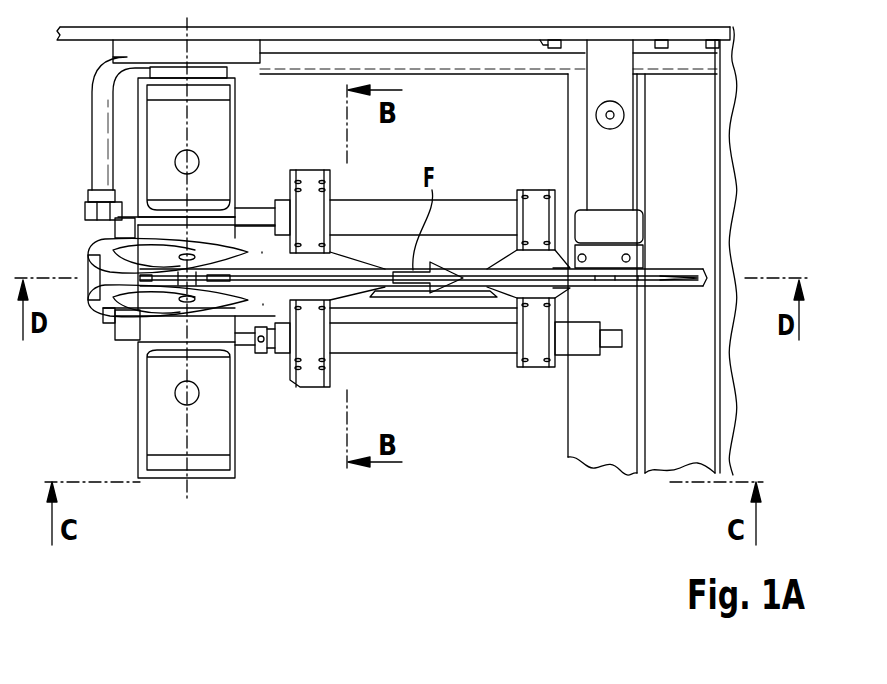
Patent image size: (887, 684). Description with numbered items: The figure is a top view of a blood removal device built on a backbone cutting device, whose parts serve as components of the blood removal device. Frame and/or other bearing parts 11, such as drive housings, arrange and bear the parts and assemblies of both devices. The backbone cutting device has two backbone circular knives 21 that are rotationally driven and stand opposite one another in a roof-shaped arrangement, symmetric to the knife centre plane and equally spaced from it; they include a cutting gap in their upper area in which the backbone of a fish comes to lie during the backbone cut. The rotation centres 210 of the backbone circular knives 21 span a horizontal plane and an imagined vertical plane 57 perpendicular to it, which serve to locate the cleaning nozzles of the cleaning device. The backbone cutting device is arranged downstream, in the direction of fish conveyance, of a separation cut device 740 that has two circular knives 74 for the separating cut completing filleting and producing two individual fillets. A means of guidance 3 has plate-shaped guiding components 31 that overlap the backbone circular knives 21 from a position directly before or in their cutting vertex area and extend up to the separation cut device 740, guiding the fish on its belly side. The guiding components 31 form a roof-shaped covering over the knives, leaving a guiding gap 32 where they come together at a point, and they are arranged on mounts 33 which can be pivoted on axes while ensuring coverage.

The frame and/or other bearing parts 11 is at (731, 32).
The means of guidance 3 is at (262, 242).
The guiding components 31 is at (237, 222).
The guiding gap 32 is at (198, 245).
The mounts 33 is at (320, 207).
The backbone circular knives 21 is at (120, 246).
The rotation centres 210 is at (105, 233).
The vertical plane 57 is at (185, 438).
The circular knives 74 is at (650, 277).
The separation cut device 740 is at (690, 260).